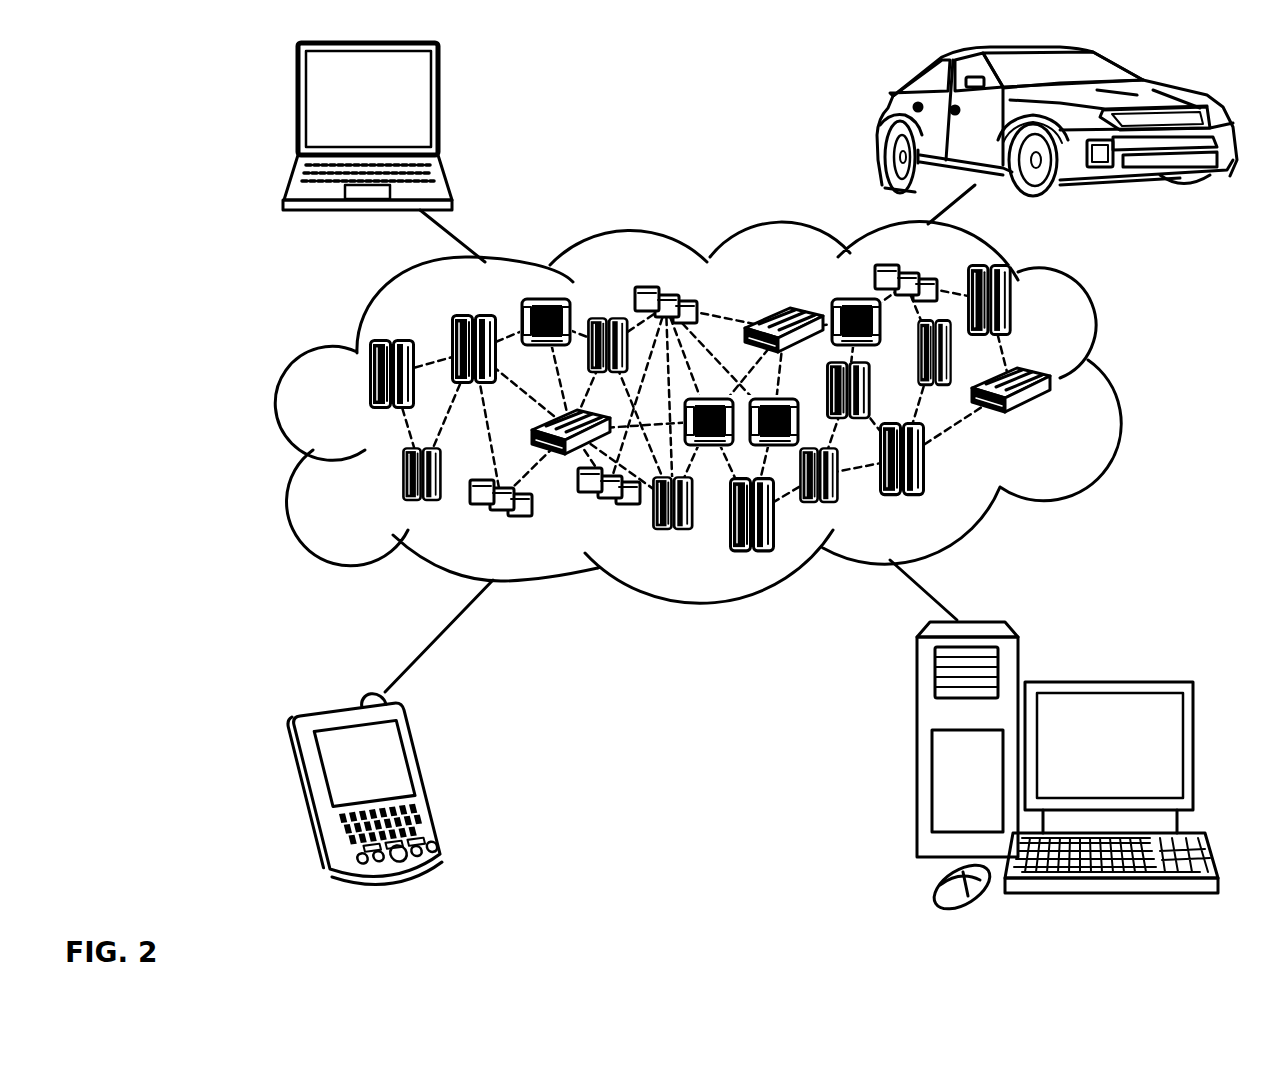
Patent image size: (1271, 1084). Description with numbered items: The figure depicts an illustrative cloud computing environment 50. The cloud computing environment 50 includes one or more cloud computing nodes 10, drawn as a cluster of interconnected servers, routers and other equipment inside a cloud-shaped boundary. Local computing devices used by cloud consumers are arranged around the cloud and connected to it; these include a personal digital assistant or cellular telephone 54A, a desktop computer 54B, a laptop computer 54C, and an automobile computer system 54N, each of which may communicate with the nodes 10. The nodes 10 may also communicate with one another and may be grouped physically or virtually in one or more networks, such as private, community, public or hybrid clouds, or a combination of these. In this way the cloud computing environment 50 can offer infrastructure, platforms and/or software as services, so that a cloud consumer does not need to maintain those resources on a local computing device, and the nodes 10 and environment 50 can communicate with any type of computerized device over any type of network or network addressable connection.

The cloud computing node 10 is at (1056, 418).
The cloud computing environment 50 is at (1107, 385).
The personal digital assistant or cellular telephone 54A is at (427, 776).
The desktop computer 54B is at (1108, 682).
The laptop computer 54C is at (440, 107).
The automobile computer system 54N is at (886, 125).